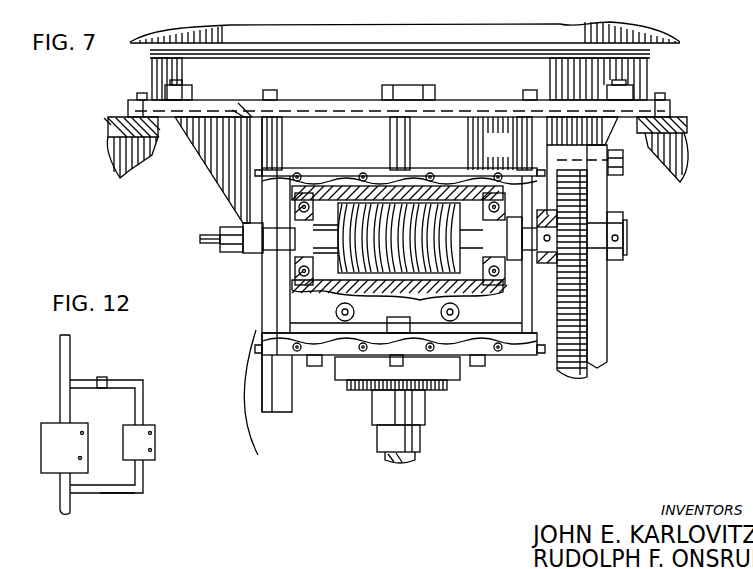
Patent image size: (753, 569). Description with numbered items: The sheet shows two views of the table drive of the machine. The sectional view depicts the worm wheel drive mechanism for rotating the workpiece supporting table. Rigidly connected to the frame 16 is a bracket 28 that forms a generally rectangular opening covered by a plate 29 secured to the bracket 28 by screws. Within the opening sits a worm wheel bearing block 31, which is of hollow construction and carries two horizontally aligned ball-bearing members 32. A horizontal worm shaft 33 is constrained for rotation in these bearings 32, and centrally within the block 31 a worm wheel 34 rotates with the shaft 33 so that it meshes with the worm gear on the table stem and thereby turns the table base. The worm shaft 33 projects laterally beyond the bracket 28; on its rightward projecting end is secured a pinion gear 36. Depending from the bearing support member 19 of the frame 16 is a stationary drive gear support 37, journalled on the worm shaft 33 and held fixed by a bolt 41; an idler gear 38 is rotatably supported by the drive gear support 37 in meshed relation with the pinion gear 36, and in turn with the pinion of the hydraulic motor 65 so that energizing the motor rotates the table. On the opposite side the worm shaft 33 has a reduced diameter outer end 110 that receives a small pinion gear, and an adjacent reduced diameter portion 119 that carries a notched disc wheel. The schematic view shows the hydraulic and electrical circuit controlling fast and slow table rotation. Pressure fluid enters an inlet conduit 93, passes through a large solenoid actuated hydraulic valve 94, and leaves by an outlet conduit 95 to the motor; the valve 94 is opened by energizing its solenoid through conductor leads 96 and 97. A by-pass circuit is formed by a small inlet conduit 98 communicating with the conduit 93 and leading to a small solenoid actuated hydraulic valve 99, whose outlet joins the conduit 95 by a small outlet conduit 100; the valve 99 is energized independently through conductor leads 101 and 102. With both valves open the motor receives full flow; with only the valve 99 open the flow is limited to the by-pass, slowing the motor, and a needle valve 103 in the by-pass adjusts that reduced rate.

In FIG. 7, the frame 16 is at (137, 130).
In FIG. 7, the bearing support member 19 is at (213, 178).
In FIG. 7, the bracket 28 is at (278, 145).
In FIG. 7, the plate 29 is at (437, 313).
In FIG. 7, the worm wheel bearing block 31 is at (330, 290).
In FIG. 7, the ball-bearing member 32 is at (290, 283).
In FIG. 7, the worm shaft 33 is at (641, 237).
In FIG. 7, the worm wheel 34 is at (390, 275).
In FIG. 7, the pinion gear 36 is at (584, 225).
In FIG. 7, the stationary drive gear support 37 is at (603, 294).
In FIG. 7, the idler gear 38 is at (583, 342).
In FIG. 7, the bolt 41 is at (623, 162).
In FIG. 7, the motor 65 is at (417, 455).
In FIG. 7, the reduced diameter outer end 110 is at (215, 245).
In FIG. 7, the reduced diameter portion 119 is at (239, 255).
In FIG. 12, the inlet conduit 93 is at (70, 344).
In FIG. 12, the solenoid actuated hydraulic valve 94 is at (48, 417).
In FIG. 12, the outlet conduit 95 is at (62, 511).
In FIG. 12, the conductor lead 96 is at (84, 433).
In FIG. 12, the conductor lead 97 is at (97, 443).
In FIG. 12, the small inlet conduit 98 is at (130, 383).
In FIG. 12, the small solenoid actuated hydraulic valve 99 is at (152, 419).
In FIG. 12, the small outlet conduit 100 is at (131, 494).
In FIG. 12, the conductor lead 101 is at (152, 432).
In FIG. 12, the conductor lead 102 is at (152, 450).
In FIG. 12, the needle valve 103 is at (104, 372).